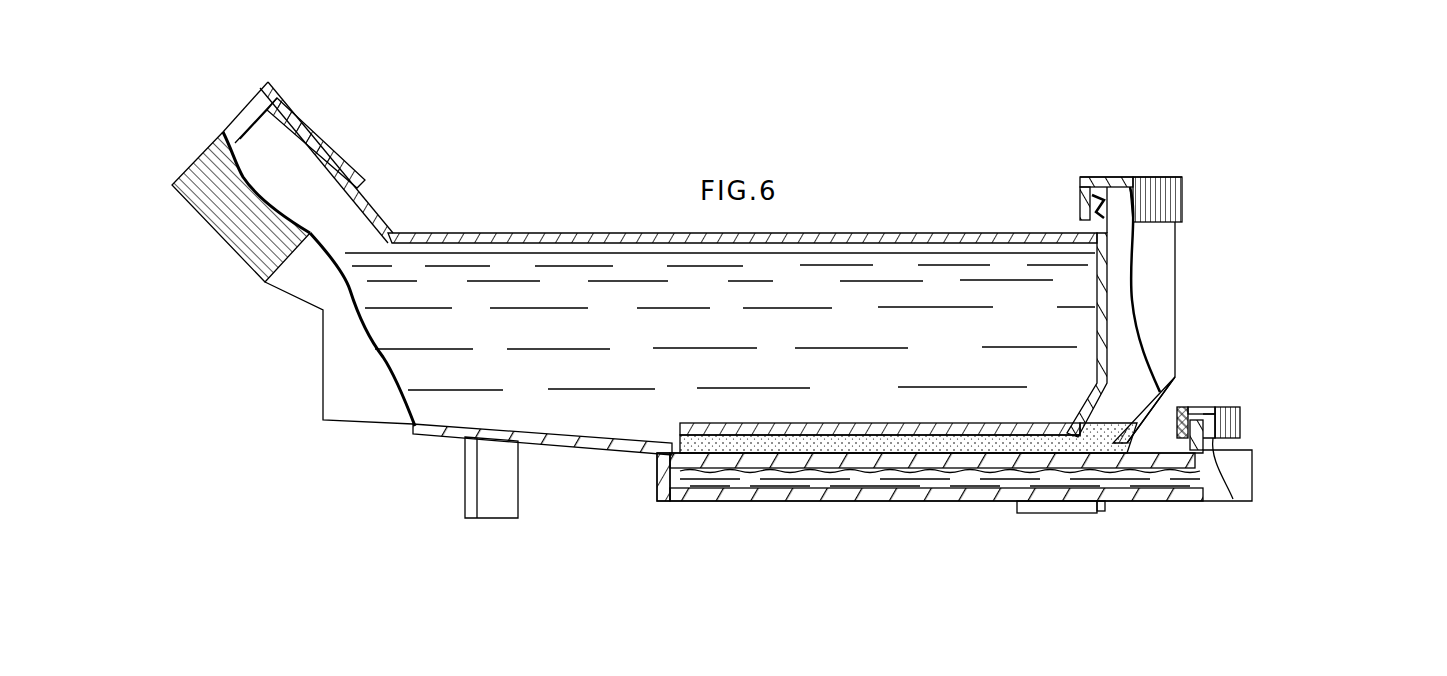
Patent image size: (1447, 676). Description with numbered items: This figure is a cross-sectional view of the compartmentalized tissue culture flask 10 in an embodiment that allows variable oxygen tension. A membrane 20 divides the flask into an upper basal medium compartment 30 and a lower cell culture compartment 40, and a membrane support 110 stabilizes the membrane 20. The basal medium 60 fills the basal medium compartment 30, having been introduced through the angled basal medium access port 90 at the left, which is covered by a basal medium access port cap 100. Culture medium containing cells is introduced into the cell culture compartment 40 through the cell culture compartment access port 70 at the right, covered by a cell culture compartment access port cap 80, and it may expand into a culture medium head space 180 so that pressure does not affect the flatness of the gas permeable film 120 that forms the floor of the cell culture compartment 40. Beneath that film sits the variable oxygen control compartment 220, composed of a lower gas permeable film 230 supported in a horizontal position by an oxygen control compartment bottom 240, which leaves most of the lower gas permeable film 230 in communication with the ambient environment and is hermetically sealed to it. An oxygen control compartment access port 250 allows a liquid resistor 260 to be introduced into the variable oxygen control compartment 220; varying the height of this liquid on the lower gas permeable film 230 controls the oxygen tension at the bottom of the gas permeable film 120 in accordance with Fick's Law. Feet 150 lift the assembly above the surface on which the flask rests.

The compartmentalized tissue culture flask 10 is at (318, 366).
The membrane 20 is at (690, 425).
The basal medium compartment 30 is at (382, 189).
The cell culture compartment 40 is at (1184, 281).
The basal medium 60 is at (720, 321).
The cell culture compartment access port 70 is at (1118, 200).
The cell culture compartment access port cap 80 is at (1170, 194).
The basal medium access port 90 is at (270, 150).
The basal medium access port cap 100 is at (232, 241).
The membrane support 110 is at (935, 427).
The gas permeable film 120 is at (690, 458).
The feet 150 is at (468, 503).
The culture medium head space 180 is at (1125, 355).
The variable oxygen control compartment 220 is at (1260, 472).
The lower gas permeable film 230 is at (786, 492).
The oxygen control compartment bottom 240 is at (896, 500).
The oxygen control compartment access port 250 is at (1200, 420).
The liquid resistor 260 is at (1182, 480).